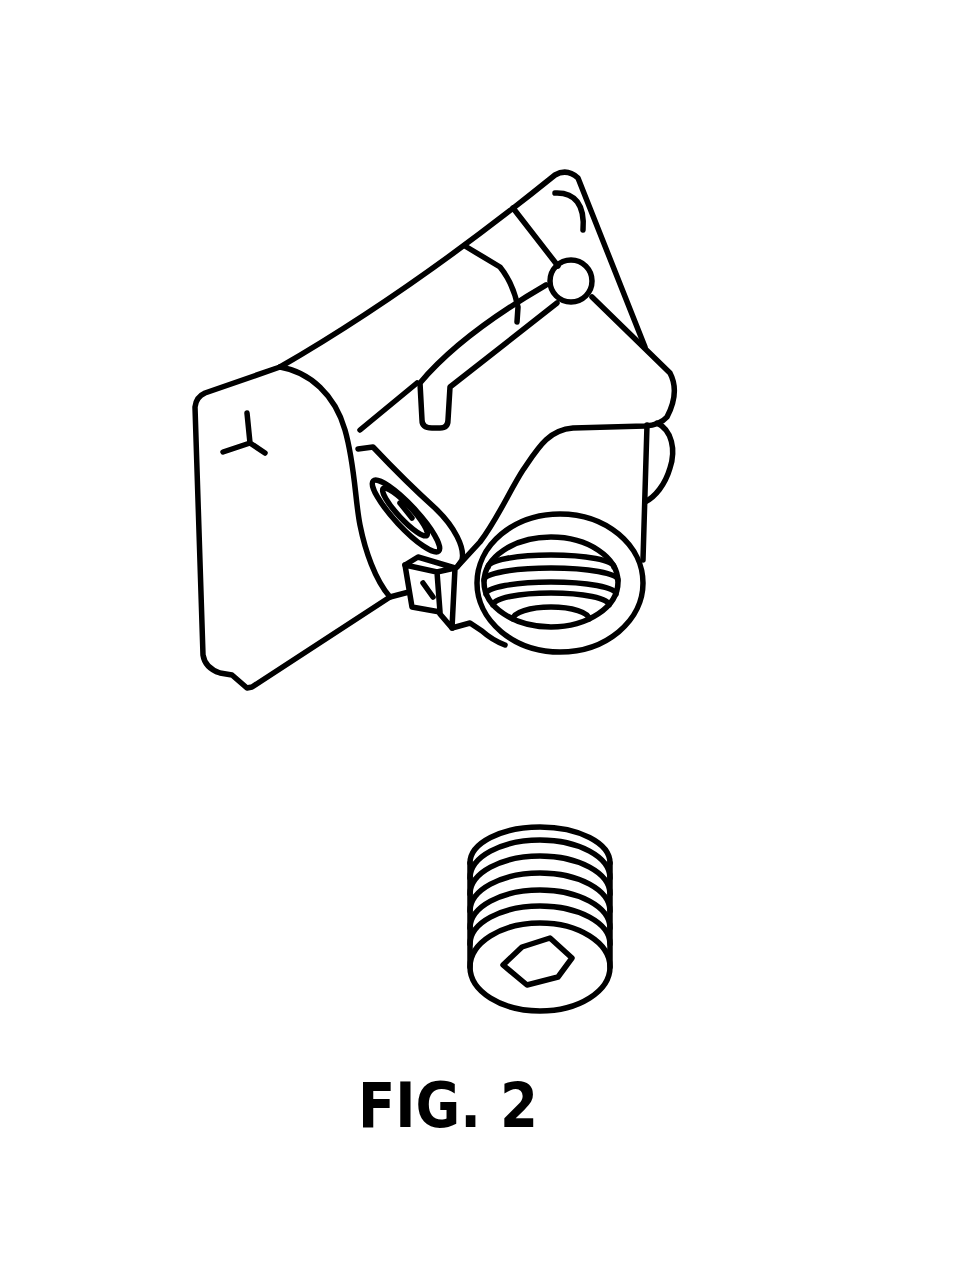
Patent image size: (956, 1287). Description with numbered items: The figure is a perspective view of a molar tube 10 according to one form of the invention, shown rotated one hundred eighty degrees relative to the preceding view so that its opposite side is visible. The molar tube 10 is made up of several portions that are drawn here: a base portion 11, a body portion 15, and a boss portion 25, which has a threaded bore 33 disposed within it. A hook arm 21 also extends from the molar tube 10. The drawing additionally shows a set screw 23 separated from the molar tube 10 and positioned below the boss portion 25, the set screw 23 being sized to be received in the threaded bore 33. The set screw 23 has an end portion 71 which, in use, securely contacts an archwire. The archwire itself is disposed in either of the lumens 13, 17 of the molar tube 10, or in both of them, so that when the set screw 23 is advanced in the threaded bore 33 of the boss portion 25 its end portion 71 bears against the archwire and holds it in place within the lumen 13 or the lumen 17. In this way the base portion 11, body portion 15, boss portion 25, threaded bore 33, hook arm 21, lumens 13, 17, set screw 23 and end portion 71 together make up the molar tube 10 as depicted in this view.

The molar tube 10 is at (665, 104).
The base portion 11 is at (220, 597).
The lumen 13 is at (435, 625).
The body portion 15 is at (382, 542).
The lumen 17 is at (367, 446).
The hook arm 21 is at (465, 246).
The set screw 23 is at (613, 897).
The boss portion 25 is at (630, 508).
The threaded bore 33 is at (551, 602).
The end portion 71 is at (521, 827).